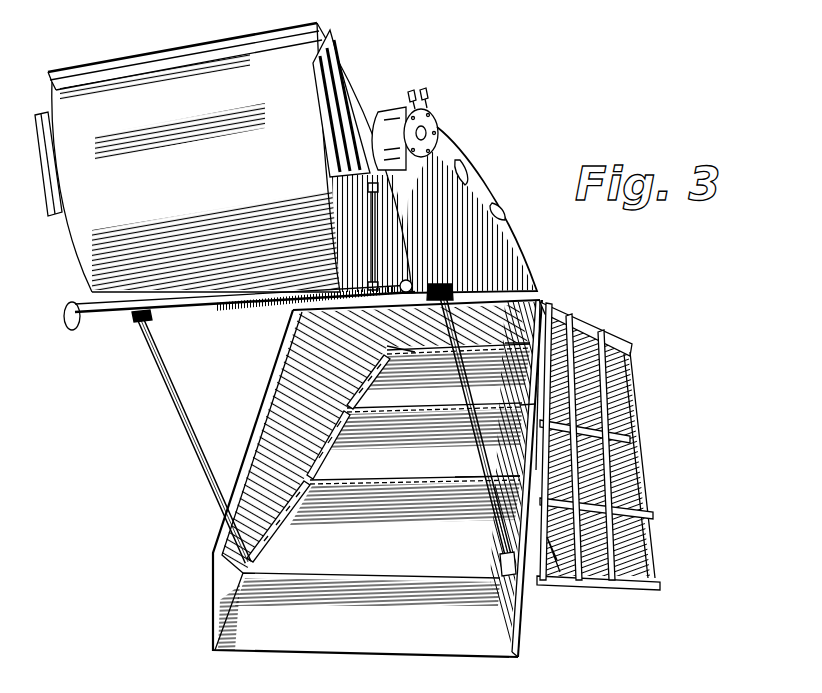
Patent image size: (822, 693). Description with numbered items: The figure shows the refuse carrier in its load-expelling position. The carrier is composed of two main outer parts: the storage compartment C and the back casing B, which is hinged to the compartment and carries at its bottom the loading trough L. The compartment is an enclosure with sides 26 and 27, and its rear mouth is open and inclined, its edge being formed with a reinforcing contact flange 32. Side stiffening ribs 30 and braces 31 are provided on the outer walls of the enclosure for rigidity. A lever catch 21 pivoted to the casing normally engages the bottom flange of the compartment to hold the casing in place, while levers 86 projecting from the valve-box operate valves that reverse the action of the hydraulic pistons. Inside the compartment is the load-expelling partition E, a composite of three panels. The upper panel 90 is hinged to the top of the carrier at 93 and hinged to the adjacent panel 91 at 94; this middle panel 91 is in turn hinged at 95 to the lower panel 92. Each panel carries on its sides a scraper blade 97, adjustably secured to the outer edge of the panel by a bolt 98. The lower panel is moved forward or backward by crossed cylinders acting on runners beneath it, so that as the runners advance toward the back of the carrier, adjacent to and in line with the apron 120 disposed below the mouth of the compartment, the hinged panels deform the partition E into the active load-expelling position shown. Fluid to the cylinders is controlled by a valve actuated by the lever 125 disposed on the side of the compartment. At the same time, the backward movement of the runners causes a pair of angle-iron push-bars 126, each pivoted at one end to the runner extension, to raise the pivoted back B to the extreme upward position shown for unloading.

The loading trough L is at (147, 54).
The back casing B is at (485, 173).
The storage compartment C is at (600, 339).
The inside partition E is at (377, 478).
The levers 86 is at (425, 90).
The lever catch 21 is at (376, 226).
The hinge of upper panel to top 93 is at (520, 345).
The side stiffening ribs 30 is at (542, 404).
The side 26 is at (630, 391).
The braces 31 is at (640, 459).
The hinge between upper and middle panels 94 is at (512, 416).
The side 27 is at (270, 415).
The push-bars 126 is at (188, 423).
The upper panel 90 is at (447, 376).
The middle panel 91 is at (426, 439).
The lower panel 92 is at (405, 515).
The hinge between middle and lower panels 95 is at (461, 480).
The scraper blade 97 is at (300, 486).
The bolt 98 is at (284, 531).
The apron 120 is at (378, 642).
The lever 125 is at (555, 560).
The reinforcing contact flange 32 is at (519, 643).